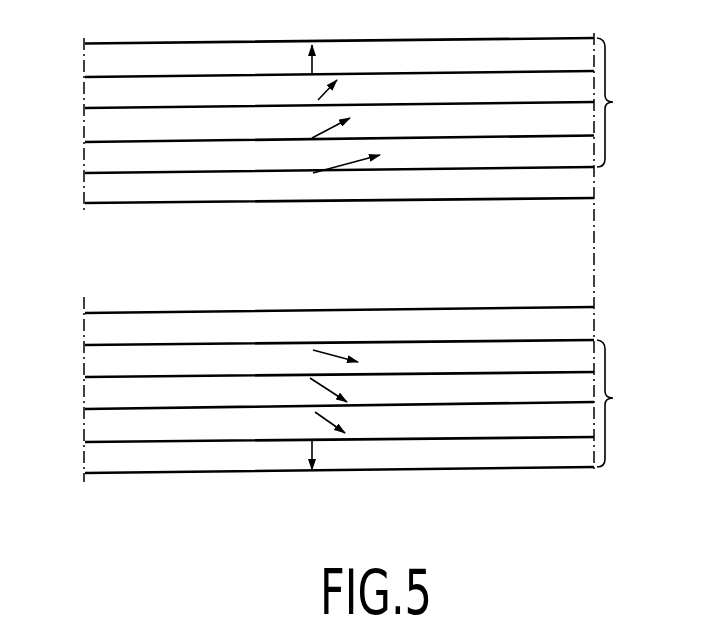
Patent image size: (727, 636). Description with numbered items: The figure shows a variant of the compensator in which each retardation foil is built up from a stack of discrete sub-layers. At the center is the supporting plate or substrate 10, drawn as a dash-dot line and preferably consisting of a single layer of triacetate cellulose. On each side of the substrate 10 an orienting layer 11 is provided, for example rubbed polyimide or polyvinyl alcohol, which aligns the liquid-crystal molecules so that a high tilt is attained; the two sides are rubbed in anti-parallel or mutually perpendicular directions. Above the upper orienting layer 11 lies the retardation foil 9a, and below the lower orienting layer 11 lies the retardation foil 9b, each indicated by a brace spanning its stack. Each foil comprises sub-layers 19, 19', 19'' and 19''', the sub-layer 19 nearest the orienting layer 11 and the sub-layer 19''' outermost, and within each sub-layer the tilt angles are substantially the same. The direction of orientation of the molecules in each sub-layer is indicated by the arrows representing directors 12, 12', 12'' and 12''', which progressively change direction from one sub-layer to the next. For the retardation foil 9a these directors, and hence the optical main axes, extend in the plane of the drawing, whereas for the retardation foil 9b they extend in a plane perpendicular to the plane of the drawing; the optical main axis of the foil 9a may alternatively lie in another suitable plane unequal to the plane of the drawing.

The retardation foil 9a is at (623, 102).
The retardation foil 9b is at (623, 403).
The substrate 10 is at (552, 250).
The orienting layer 11 is at (108, 189).
The director 12 is at (346, 258).
The director 12' is at (308, 260).
The director 12'' is at (350, 261).
The director 12''' is at (284, 261).
The sub-layer 19 is at (312, 257).
The sub-layer 19' is at (312, 255).
The sub-layer 19'' is at (311, 257).
The sub-layer 19''' is at (311, 257).